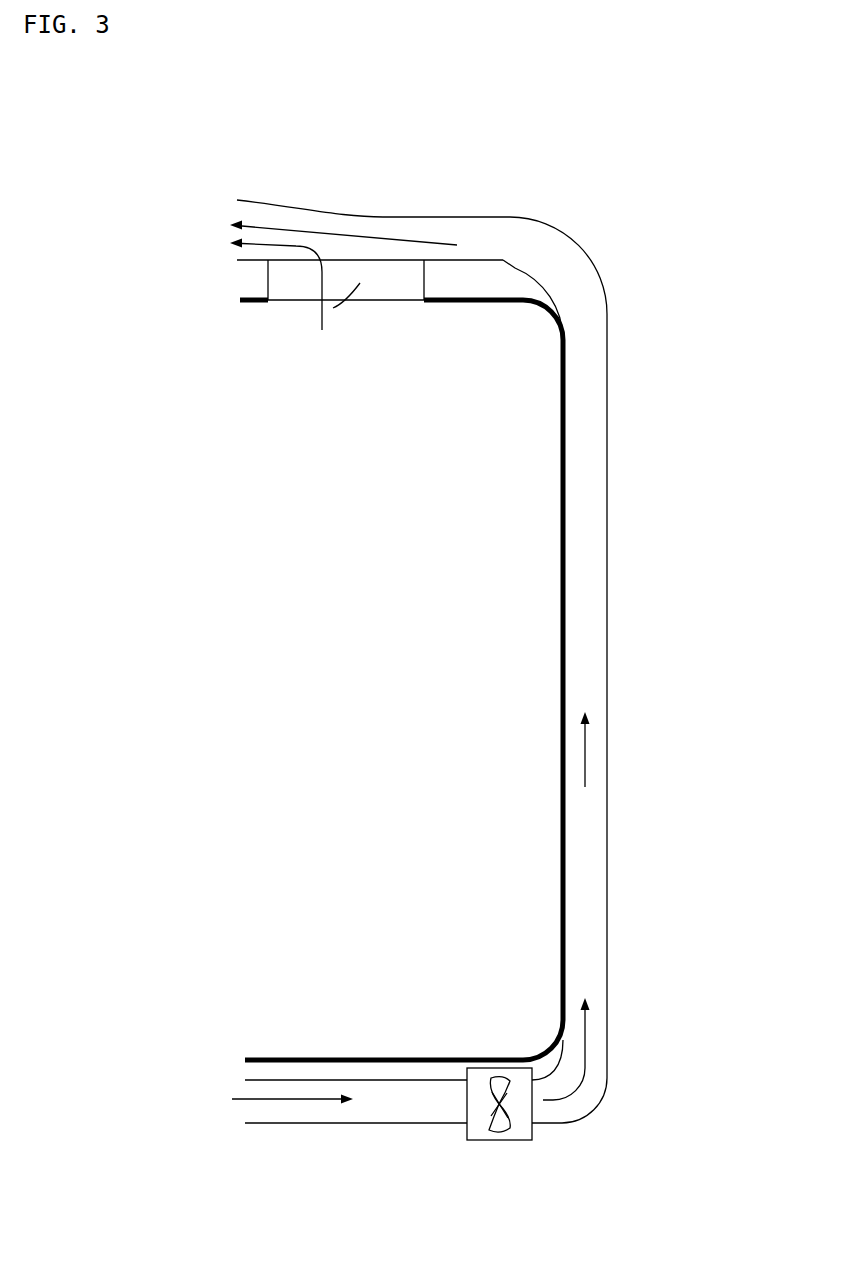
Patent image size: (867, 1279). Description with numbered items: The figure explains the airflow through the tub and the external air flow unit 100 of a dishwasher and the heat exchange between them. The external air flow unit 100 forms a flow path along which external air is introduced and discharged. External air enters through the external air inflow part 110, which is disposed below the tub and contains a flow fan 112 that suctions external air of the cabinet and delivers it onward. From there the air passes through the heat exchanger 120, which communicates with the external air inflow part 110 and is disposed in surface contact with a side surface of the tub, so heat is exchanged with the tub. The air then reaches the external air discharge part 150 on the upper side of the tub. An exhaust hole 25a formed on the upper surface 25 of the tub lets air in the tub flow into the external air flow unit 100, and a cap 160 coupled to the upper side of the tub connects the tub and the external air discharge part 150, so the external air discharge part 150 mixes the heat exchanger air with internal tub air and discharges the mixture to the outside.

The external air flow unit 100 is at (618, 645).
The external air inflow part 110 is at (308, 1128).
The flow fan 112 is at (503, 1140).
The heat exchanger 120 is at (620, 452).
The external air discharge part 150 is at (410, 193).
The cap 160 is at (257, 280).
The upper surface of the tub 25 is at (498, 297).
The exhaust hole 25a is at (350, 300).